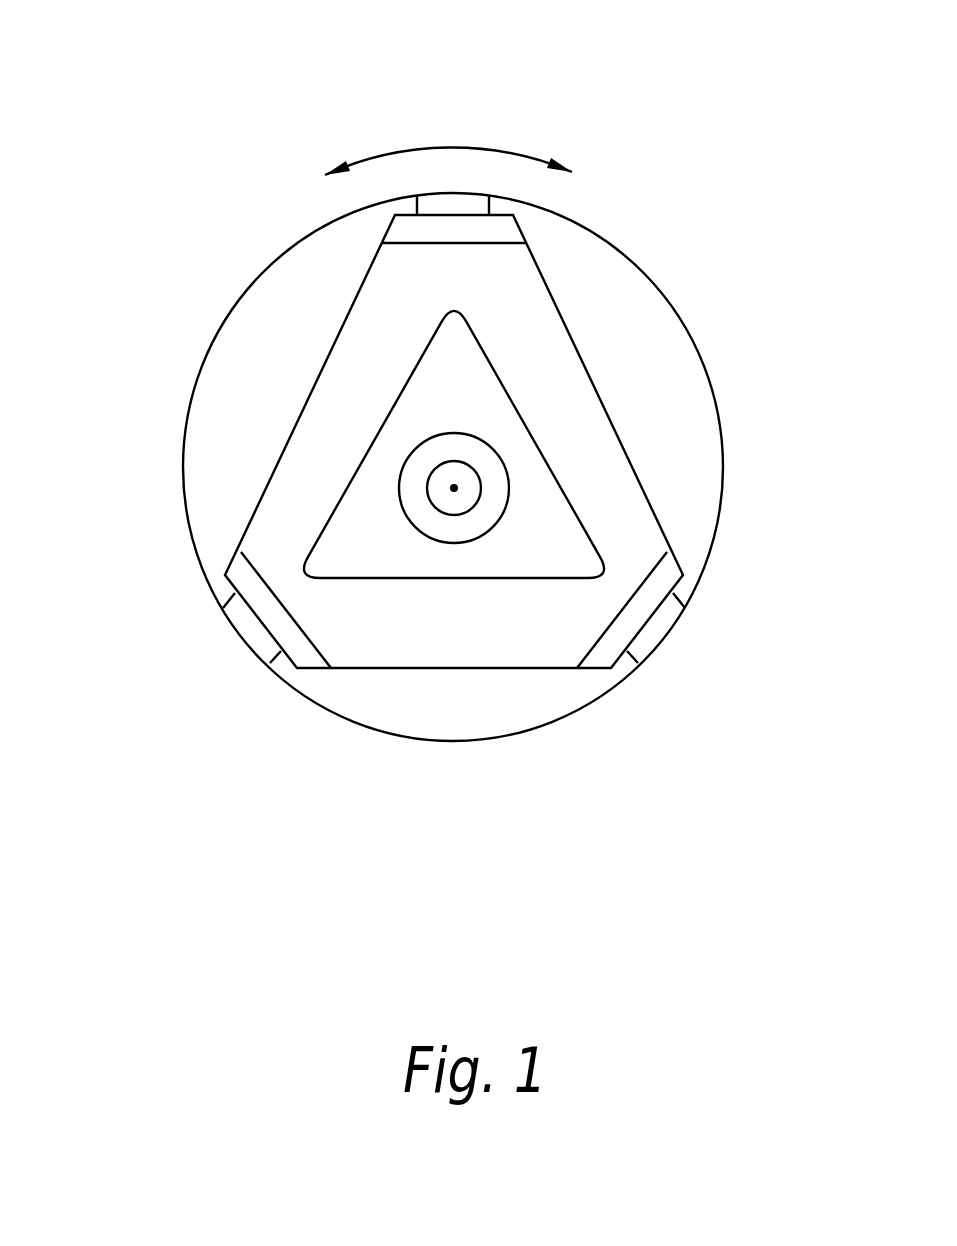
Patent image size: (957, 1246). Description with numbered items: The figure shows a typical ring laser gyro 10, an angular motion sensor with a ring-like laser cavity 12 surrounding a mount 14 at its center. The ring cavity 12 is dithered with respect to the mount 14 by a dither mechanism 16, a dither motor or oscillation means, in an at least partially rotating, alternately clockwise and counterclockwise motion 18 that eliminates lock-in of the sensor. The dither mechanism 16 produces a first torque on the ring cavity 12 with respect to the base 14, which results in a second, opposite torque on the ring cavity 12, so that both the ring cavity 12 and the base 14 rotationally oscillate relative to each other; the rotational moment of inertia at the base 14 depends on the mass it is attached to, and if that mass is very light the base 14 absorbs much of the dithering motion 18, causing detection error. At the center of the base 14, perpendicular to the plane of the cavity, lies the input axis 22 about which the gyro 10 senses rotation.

The ring laser gyro 10 is at (664, 236).
The ring-like laser cavity 12 is at (587, 423).
The mount 14 is at (437, 493).
The dither mechanism 16 is at (465, 533).
The dithering motion 18 is at (450, 147).
The input axis 22 is at (460, 485).